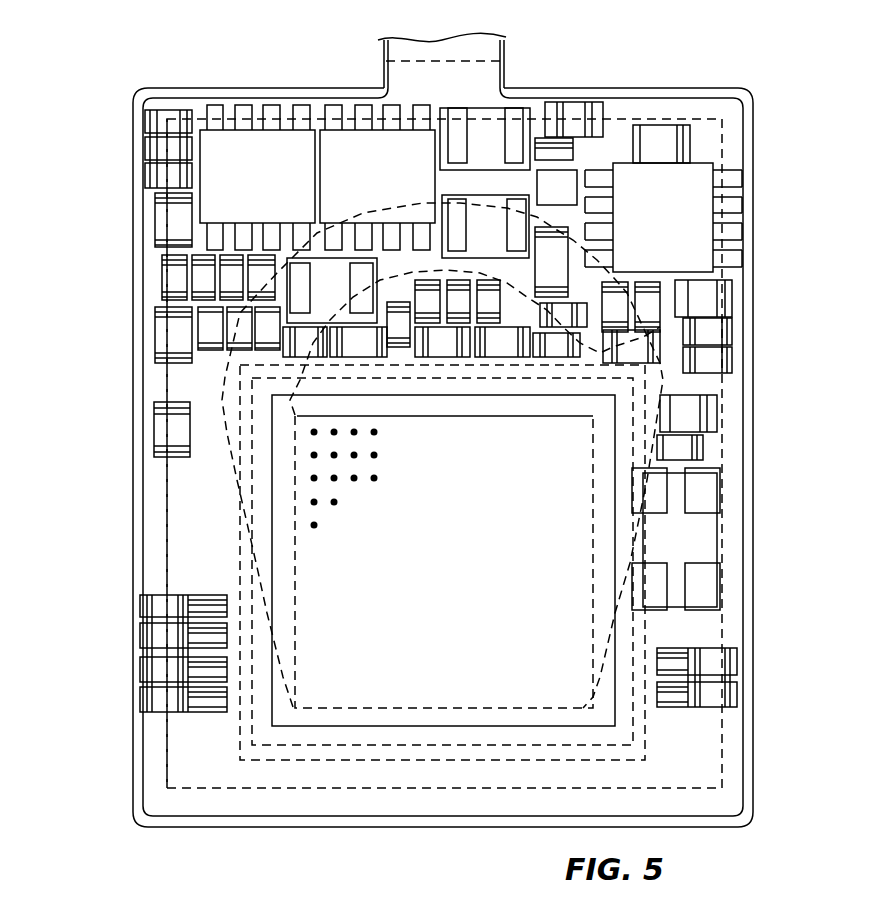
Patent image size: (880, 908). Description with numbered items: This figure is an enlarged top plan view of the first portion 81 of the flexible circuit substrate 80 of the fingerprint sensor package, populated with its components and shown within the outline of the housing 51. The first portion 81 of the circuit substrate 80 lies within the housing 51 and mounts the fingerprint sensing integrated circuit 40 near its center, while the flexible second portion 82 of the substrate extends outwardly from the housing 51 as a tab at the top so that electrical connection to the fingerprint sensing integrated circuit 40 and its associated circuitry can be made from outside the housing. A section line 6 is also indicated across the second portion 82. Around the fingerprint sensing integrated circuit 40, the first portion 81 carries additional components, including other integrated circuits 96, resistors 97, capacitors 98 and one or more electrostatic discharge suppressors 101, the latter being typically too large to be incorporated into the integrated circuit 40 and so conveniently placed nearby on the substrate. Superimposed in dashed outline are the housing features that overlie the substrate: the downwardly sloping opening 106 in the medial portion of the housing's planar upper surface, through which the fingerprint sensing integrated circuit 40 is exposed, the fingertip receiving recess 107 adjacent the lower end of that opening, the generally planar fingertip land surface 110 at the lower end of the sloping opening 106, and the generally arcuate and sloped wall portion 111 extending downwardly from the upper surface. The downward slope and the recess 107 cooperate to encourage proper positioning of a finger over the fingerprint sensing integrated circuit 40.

The section line 6 is at (472, 862).
The fingerprint sensing integrated circuit 40 is at (457, 582).
The housing 51 is at (752, 447).
The circuit substrate 80 is at (150, 745).
The first portion 81 is at (180, 775).
The second portion 82 is at (405, 47).
The integrated circuits 96 is at (338, 173).
The resistors 97 is at (200, 273).
The capacitors 98 is at (318, 307).
The electrostatic discharge suppressor 101 is at (150, 670).
The downwardly sloping opening 106 is at (358, 693).
The fingertip receiving recess 107 is at (515, 313).
The fingertip land surface 110 is at (693, 313).
The arcuate and sloped wall portion 111 is at (485, 223).